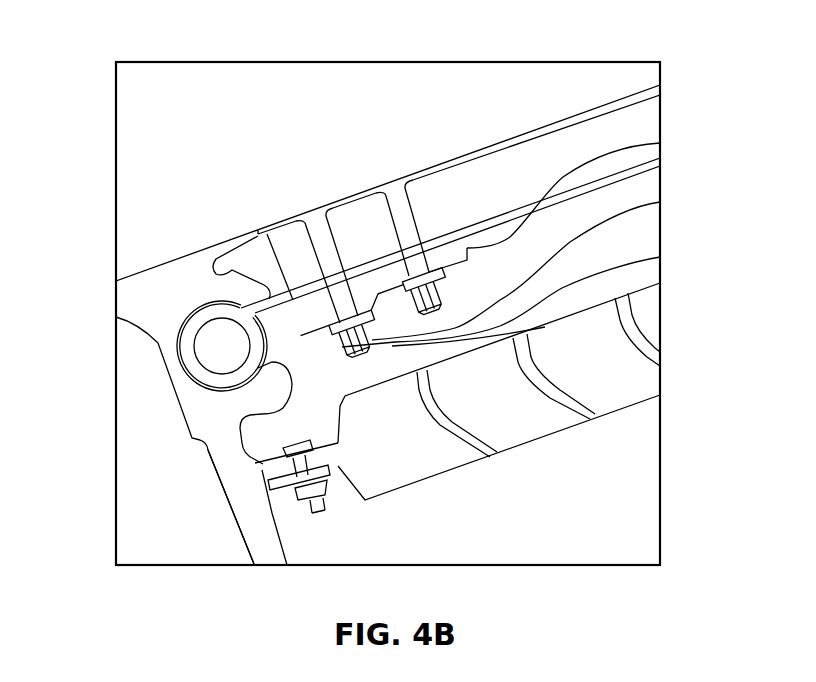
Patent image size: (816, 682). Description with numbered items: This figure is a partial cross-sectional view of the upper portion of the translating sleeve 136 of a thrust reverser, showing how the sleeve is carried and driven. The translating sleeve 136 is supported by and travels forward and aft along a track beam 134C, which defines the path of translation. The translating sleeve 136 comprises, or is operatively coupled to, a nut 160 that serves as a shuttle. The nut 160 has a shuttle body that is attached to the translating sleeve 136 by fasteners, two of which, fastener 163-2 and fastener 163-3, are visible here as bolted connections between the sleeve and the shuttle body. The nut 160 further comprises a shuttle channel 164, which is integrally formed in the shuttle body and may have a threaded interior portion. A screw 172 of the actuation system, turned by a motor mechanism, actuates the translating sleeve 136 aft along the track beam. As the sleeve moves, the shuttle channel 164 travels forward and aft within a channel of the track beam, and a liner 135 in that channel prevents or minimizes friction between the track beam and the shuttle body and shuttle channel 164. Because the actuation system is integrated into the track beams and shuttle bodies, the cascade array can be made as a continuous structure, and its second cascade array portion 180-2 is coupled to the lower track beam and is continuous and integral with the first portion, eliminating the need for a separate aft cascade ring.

The translating sleeve 136 is at (530, 130).
The nut 160 is at (660, 143).
The fastener 163-2 is at (660, 203).
The fastener 163-3 is at (660, 258).
The screw 172 is at (208, 343).
The shuttle channel 164 is at (182, 352).
The liner 135 is at (183, 377).
The frame member 134C is at (238, 522).
The second cascade array portion 180-2 is at (573, 427).